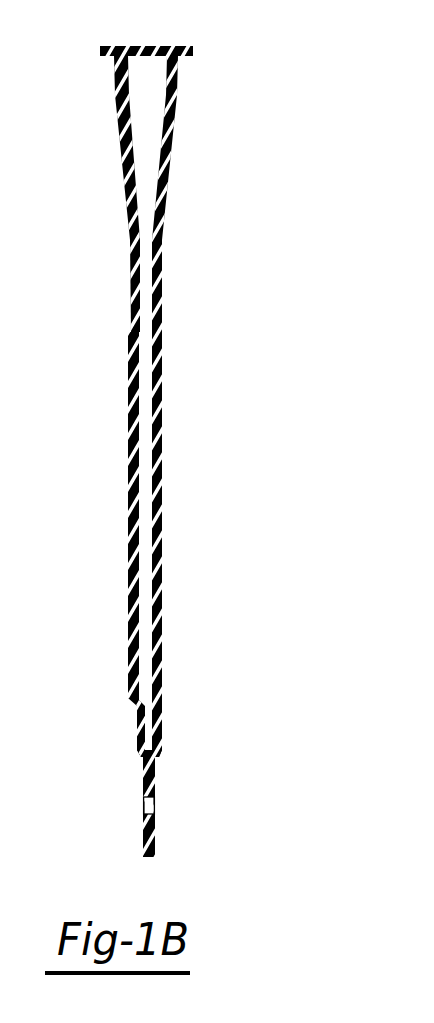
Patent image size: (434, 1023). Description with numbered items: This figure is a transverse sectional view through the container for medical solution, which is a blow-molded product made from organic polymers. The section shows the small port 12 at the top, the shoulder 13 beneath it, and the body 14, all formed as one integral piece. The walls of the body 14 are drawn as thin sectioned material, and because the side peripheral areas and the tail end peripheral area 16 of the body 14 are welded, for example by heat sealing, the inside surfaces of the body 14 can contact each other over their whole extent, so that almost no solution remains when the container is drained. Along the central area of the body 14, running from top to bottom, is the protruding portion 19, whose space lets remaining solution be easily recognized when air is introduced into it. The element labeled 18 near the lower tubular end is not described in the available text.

The small port 12 is at (177, 84).
The shoulder 13 is at (162, 181).
The body 14 is at (163, 526).
The protruding portion 19 is at (128, 370).
The side window in cannula 18 is at (156, 806).
The tail end peripheral area 16 is at (156, 843).